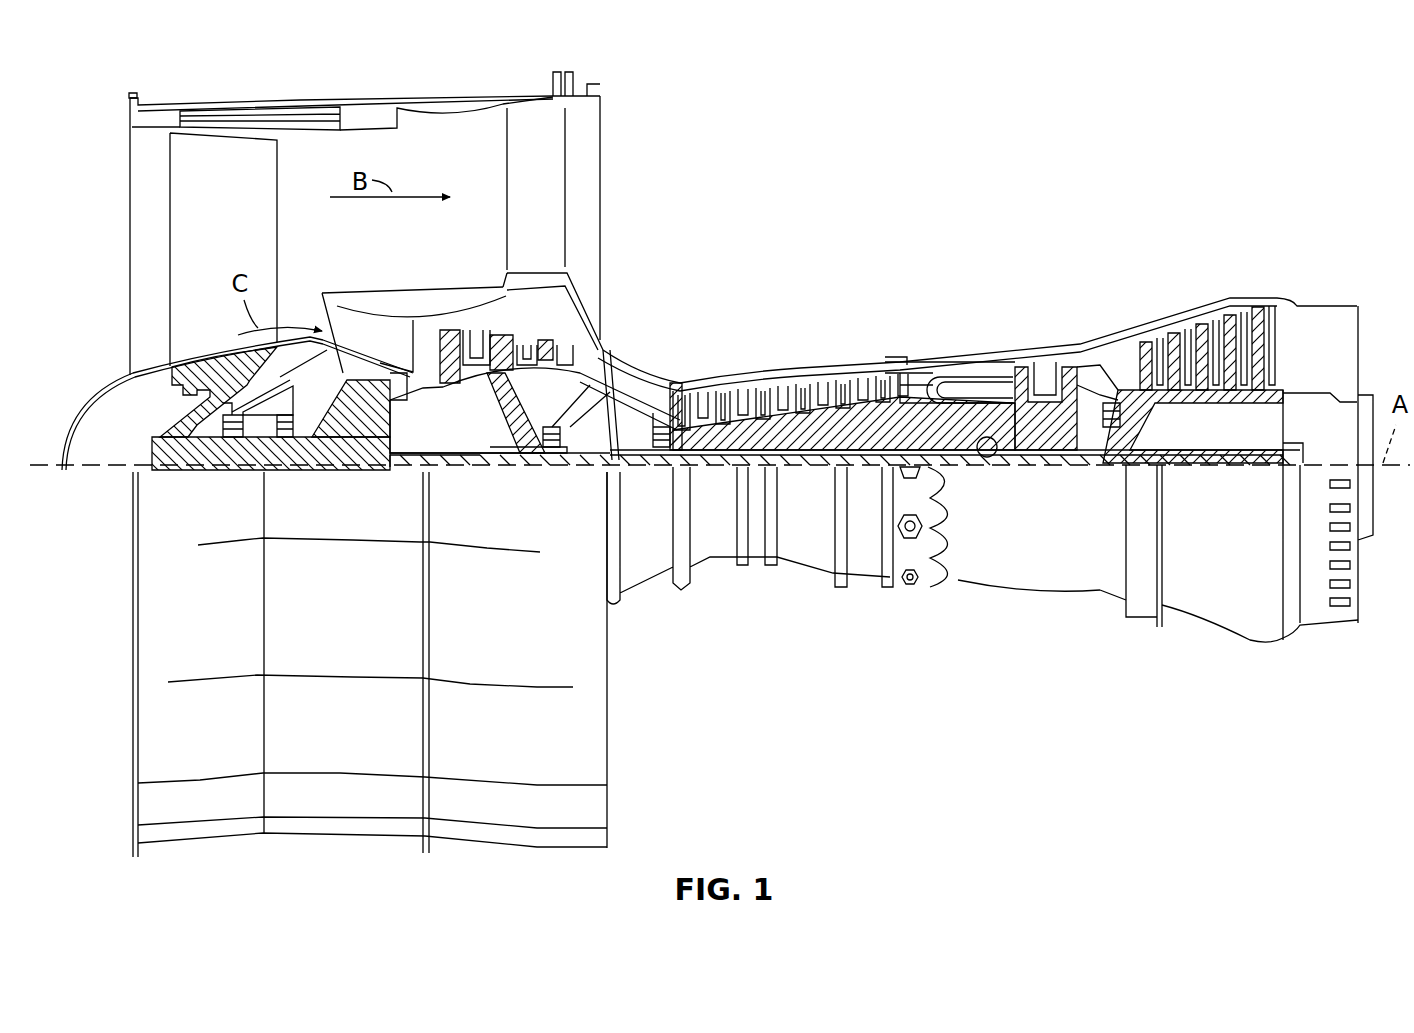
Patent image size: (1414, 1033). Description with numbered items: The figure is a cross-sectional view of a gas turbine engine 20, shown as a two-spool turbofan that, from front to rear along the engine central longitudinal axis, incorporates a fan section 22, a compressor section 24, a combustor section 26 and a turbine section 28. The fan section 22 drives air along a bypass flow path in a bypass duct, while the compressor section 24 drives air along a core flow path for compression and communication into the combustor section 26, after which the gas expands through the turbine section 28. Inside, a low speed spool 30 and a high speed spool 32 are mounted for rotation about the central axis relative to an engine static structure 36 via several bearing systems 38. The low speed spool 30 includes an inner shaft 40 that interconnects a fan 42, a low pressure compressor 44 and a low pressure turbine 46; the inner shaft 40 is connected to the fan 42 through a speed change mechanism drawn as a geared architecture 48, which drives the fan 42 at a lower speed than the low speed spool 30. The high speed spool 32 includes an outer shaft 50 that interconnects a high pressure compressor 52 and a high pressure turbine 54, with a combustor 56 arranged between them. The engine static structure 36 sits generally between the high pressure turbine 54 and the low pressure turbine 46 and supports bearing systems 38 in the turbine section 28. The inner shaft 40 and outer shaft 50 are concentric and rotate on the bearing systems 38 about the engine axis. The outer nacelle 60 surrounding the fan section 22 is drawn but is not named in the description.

The gas turbine engine 20 is at (1180, 133).
The fan section 22 is at (241, 96).
The compressor section 24 is at (797, 323).
The combustor section 26 is at (958, 322).
The turbine section 28 is at (1108, 298).
The low speed spool 30 is at (830, 472).
The high speed spool 32 is at (878, 410).
The engine static structure 36 is at (868, 586).
The bearing systems 38 is at (236, 440).
The inner shaft 40 is at (618, 460).
The fan 42 is at (250, 232).
The low pressure compressor 44 is at (523, 340).
The low pressure turbine 46 is at (1210, 320).
The geared architecture 48 is at (372, 432).
The outer shaft 50 is at (992, 447).
The high pressure compressor 52 is at (780, 428).
The high pressure turbine 54 is at (1045, 358).
The combustor 56 is at (972, 385).
The nacelle 60 is at (300, 105).